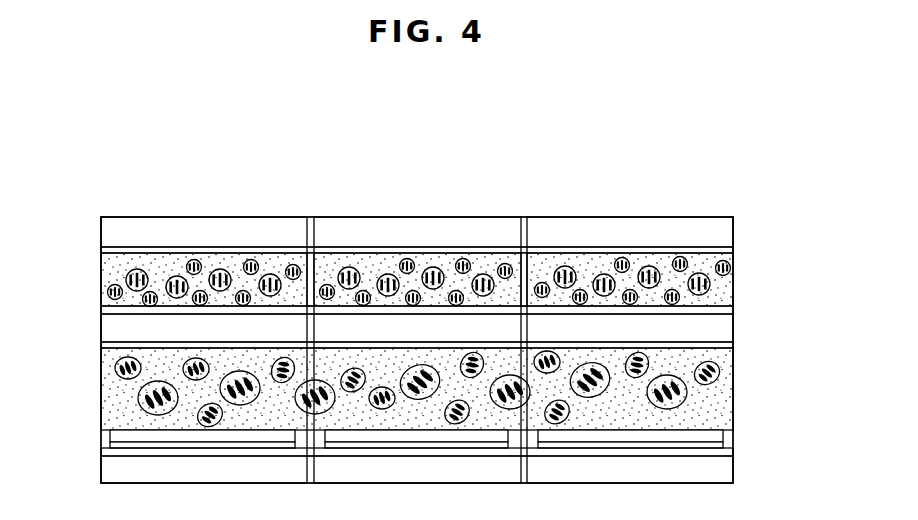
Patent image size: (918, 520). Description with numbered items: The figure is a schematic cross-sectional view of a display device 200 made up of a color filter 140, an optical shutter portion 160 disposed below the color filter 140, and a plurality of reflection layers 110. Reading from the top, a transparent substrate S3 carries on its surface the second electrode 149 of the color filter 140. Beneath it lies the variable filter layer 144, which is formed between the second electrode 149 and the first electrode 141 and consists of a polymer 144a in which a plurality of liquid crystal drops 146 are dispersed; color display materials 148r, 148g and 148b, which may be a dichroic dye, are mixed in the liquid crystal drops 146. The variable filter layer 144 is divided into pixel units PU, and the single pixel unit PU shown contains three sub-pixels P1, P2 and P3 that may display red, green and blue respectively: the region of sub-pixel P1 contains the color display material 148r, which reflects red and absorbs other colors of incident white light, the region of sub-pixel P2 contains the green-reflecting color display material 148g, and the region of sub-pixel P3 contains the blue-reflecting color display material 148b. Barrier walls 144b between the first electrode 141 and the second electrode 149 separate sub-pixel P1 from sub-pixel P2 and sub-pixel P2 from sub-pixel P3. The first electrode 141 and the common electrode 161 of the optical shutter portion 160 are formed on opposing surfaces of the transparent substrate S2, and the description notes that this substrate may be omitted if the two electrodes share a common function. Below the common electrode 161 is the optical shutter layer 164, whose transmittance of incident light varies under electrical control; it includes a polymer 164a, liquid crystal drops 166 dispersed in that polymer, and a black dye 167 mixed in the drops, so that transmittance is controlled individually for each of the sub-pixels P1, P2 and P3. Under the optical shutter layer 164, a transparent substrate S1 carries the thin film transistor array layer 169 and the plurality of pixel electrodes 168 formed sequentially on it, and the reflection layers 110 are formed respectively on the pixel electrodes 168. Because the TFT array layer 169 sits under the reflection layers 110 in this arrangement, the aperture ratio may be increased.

The display device 200 is at (745, 197).
The transparent substrate S1 is at (107, 471).
The transparent substrate S2 is at (107, 333).
The transparent substrate S3 is at (107, 235).
The color filter 140 is at (448, 251).
The second electrode 149 is at (733, 247).
The variable filter layer 144 is at (477, 244).
The polymer 144a is at (718, 291).
The barrier wall 144b is at (524, 253).
The liquid crystal drops 146 is at (731, 268).
The color display material 148r is at (195, 259).
The color display material 148g is at (407, 258).
The color display material 148b is at (622, 257).
The first electrode 141 is at (733, 310).
The optical shutter portion 160 is at (448, 396).
The common electrode 161 is at (733, 345).
The optical shutter layer 164 is at (477, 387).
The polymer 164a is at (725, 394).
The liquid crystal drops 166 is at (720, 374).
The black dye 167 is at (712, 368).
The reflection layers 110 is at (724, 431).
The pixel electrodes 168 is at (724, 445).
The thin film transistor array layer 169 is at (733, 455).
The sub-pixel P1 is at (303, 175).
The sub-pixel P2 is at (518, 175).
The sub-pixel P3 is at (630, 311).
The pixel unit PU is at (417, 290).